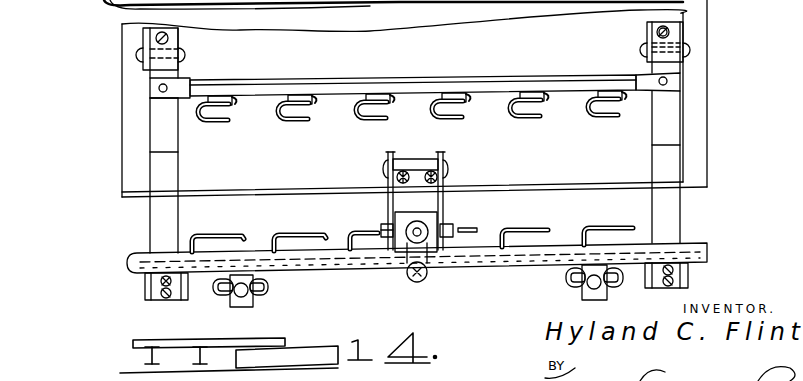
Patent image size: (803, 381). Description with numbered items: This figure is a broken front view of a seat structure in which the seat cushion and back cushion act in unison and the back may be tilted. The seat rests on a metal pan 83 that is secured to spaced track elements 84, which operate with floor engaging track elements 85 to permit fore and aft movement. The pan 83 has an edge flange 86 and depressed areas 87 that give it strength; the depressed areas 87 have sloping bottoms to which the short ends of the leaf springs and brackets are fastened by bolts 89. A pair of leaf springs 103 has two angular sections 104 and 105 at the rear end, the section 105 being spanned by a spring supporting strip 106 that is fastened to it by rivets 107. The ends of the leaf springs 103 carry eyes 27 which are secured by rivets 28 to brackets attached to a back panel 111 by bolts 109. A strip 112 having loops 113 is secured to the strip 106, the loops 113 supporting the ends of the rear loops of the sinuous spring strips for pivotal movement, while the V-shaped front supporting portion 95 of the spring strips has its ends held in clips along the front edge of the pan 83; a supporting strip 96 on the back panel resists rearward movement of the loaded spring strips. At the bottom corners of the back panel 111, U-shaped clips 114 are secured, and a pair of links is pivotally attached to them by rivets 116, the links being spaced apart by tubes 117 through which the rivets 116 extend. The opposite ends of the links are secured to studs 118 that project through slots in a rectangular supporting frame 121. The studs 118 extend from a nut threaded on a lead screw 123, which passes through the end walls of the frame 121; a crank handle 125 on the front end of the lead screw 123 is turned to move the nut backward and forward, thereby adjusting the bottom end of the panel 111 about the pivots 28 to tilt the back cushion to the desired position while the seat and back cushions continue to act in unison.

The eye 27 is at (672, 39).
The rivets 28 is at (672, 50).
The metal pan 83 is at (130, 272).
The spaced track elements 84 is at (575, 278).
The floor engaging track elements 85 is at (582, 298).
The edge flange 86 is at (258, 250).
The depressed areas 87 is at (148, 302).
The bolts 89 is at (168, 298).
The V-shaped front supporting portion 95 is at (606, 224).
The supporting strip 96 is at (290, 270).
The leaf springs 103 is at (167, 172).
The angular section 104 is at (170, 138).
The angular section 105 is at (665, 31).
The spring supporting strip 106 is at (556, 76).
The rivets 107 is at (662, 88).
The bolts 109 is at (453, 230).
The panel 111 is at (697, 168).
The strip 112 is at (576, 81).
The loops 113 is at (524, 92).
The U-shaped clips 114 is at (440, 160).
The rivets 116 is at (384, 166).
The tubes 117 is at (407, 160).
The studs 118 is at (384, 228).
The rectangular supporting frame 121 is at (397, 205).
The lead screw 123 is at (425, 240).
The crank handle 125 is at (420, 285).